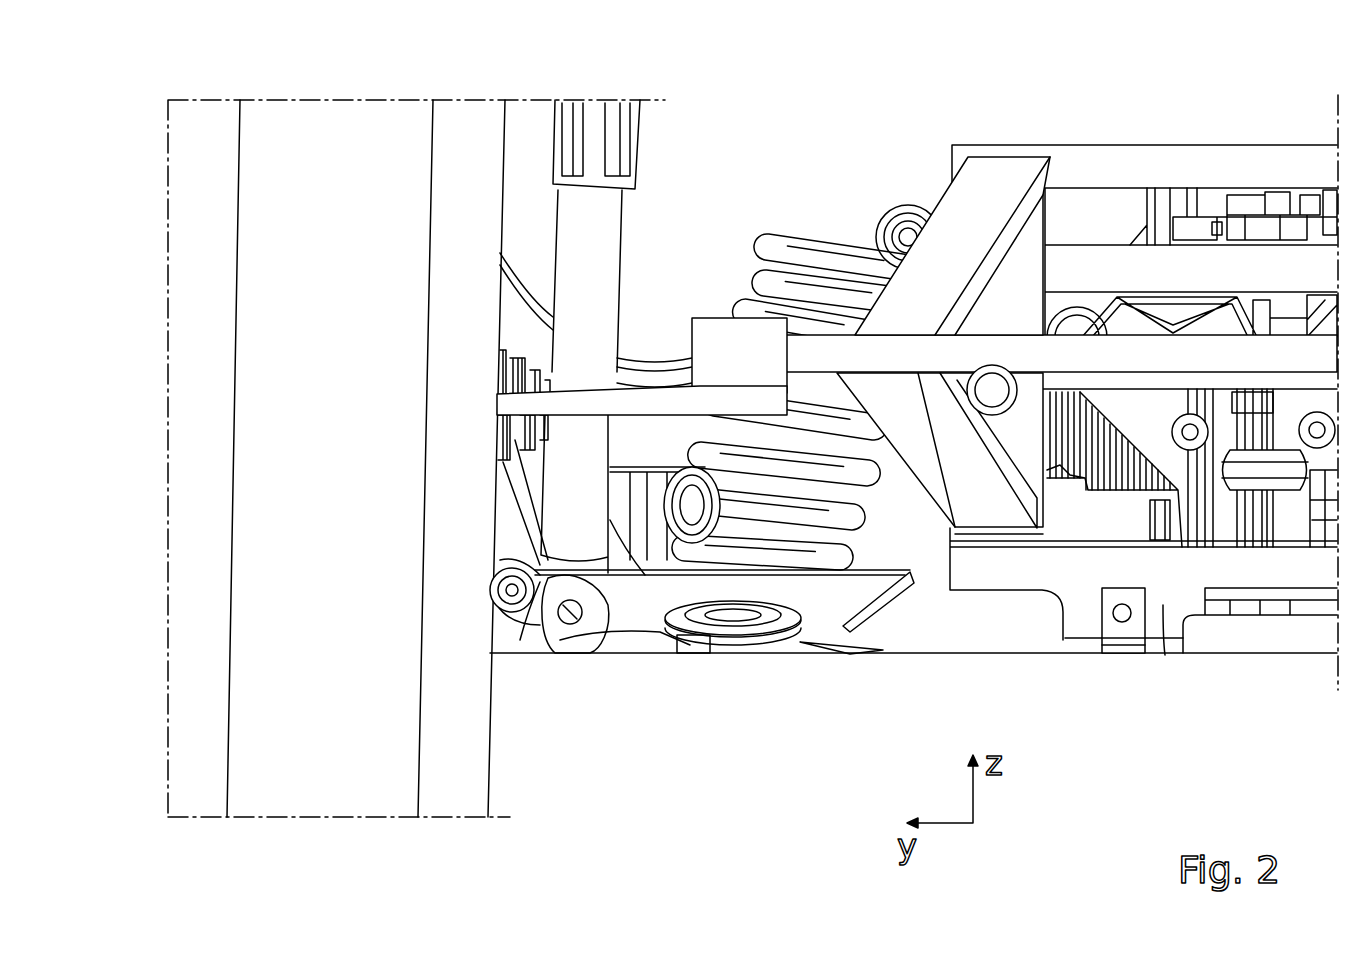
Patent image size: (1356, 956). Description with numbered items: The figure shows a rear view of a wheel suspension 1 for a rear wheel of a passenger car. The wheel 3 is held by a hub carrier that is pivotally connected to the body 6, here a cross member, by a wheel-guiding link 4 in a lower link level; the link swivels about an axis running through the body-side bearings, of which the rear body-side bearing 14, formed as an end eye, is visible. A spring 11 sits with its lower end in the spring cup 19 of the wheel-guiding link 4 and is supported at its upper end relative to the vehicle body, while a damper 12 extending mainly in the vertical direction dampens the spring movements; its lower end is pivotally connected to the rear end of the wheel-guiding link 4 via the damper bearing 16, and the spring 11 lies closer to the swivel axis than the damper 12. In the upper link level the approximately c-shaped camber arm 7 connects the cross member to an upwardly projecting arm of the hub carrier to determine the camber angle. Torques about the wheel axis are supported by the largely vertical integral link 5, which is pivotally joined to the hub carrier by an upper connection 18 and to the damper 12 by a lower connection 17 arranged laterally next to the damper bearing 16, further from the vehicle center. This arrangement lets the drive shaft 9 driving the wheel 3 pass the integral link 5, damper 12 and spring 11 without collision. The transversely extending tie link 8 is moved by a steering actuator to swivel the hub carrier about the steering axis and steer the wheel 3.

The wheel suspension 1 is at (745, 108).
The wheel 3 is at (200, 265).
The wheel-guiding link 4 is at (637, 637).
The integral link 5 is at (543, 560).
The body 6 is at (960, 210).
The camber arm 7 is at (513, 280).
The tie link 8 is at (623, 400).
The drive shaft 9 is at (663, 427).
The spring 11 is at (844, 573).
The damper 12 is at (612, 228).
The rear body-side bearing 14 is at (1110, 668).
The damper bearing 16 is at (577, 628).
The lower connection 17 is at (522, 585).
The upper connection 18 is at (522, 310).
The spring cup 19 is at (724, 672).